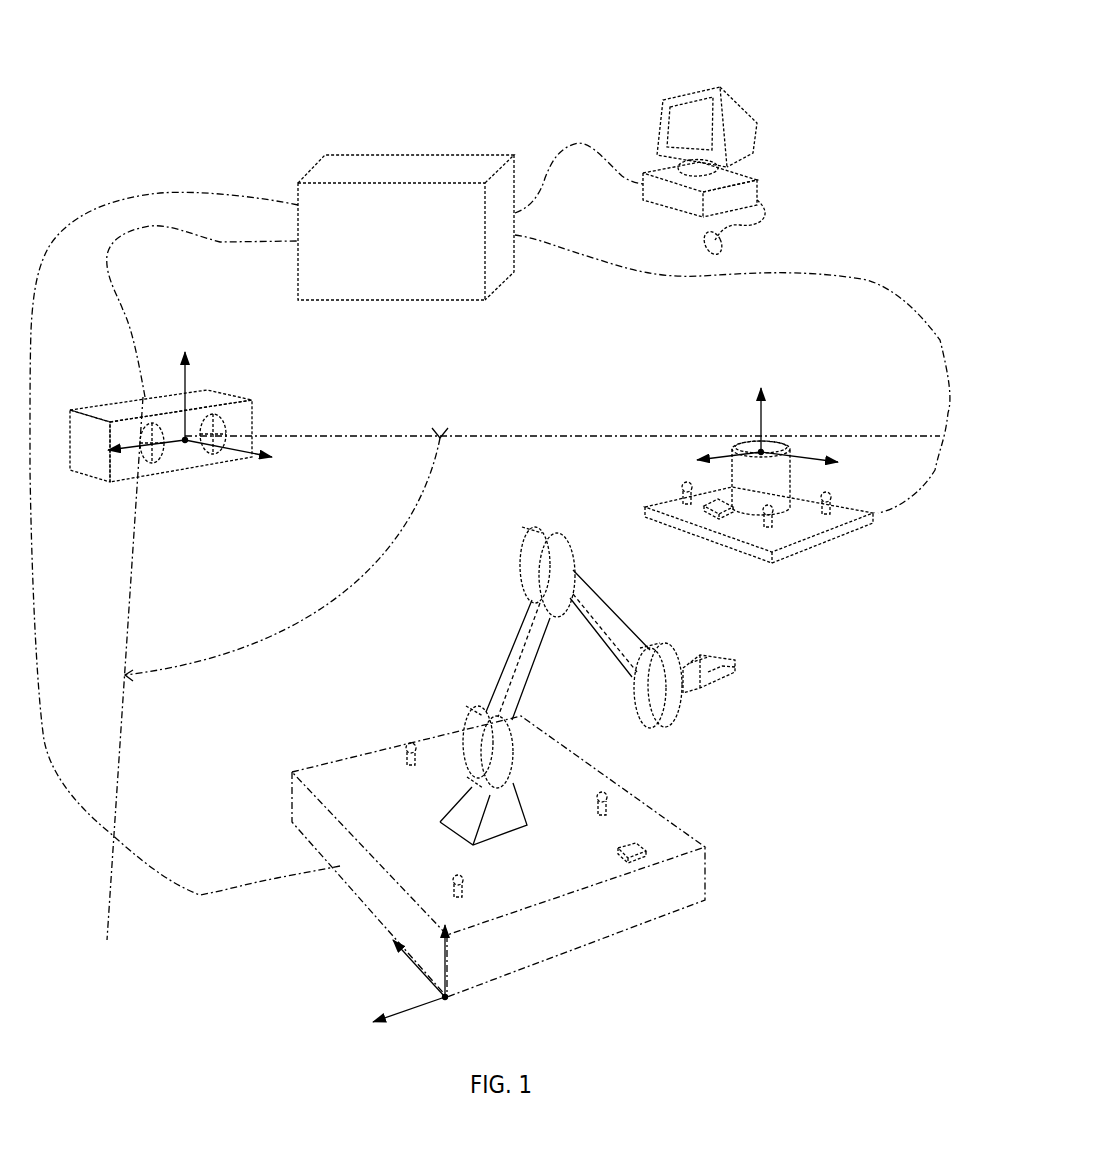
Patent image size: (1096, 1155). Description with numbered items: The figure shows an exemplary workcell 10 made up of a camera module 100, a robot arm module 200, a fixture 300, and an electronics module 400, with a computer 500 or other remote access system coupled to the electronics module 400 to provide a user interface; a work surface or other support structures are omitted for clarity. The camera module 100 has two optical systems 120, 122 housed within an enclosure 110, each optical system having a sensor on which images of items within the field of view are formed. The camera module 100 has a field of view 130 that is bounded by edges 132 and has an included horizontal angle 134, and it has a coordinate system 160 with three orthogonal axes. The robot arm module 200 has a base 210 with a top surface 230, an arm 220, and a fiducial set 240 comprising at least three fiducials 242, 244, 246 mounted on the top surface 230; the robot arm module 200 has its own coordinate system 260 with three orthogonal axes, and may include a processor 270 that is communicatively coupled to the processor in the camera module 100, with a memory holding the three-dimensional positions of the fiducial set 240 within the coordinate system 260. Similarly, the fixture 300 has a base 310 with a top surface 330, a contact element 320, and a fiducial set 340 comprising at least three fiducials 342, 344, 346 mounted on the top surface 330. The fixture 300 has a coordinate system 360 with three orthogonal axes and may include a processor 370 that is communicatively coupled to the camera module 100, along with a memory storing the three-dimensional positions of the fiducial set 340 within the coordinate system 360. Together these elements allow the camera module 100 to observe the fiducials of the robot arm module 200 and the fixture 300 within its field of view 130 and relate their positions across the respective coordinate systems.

The workcell 10 is at (408, 72).
The camera module 100 is at (173, 417).
The enclosure 110 is at (212, 392).
The optical system 120 is at (155, 472).
The optical system 122 is at (213, 472).
The field of view 130 is at (510, 665).
The edges 132 is at (418, 432).
The included horizontal angle 134 is at (305, 623).
The coordinate system 160 is at (196, 350).
The robot arm module 200 is at (520, 776).
The base 210 is at (365, 745).
The arm 220 is at (545, 665).
The top surface 230 is at (490, 853).
The fiducial set 240 is at (517, 771).
The fiducial 242 is at (410, 745).
The fiducial 244 is at (470, 872).
The fiducial 246 is at (603, 790).
The coordinate system 260 is at (455, 965).
The processor 270 is at (640, 845).
The fixture 300 is at (750, 458).
The base 310 is at (772, 531).
The contact element 320 is at (780, 442).
The top surface 330 is at (792, 520).
The fiducial set 340 is at (738, 499).
The fiducial 342 is at (680, 482).
The fiducial 344 is at (755, 514).
The fiducial 346 is at (832, 493).
The coordinate system 360 is at (768, 400).
The processor 370 is at (705, 508).
The electronics module 400 is at (430, 160).
The computer 500 is at (720, 88).